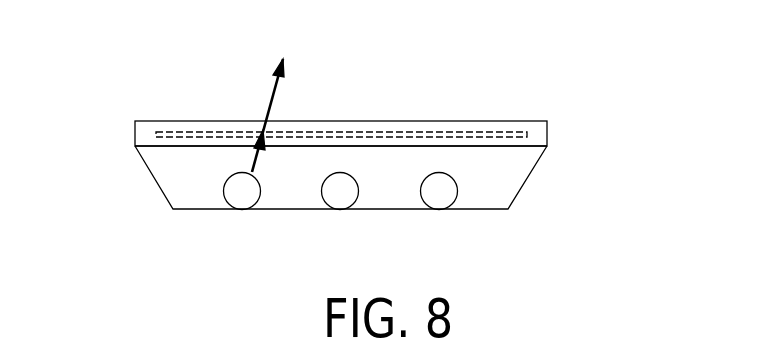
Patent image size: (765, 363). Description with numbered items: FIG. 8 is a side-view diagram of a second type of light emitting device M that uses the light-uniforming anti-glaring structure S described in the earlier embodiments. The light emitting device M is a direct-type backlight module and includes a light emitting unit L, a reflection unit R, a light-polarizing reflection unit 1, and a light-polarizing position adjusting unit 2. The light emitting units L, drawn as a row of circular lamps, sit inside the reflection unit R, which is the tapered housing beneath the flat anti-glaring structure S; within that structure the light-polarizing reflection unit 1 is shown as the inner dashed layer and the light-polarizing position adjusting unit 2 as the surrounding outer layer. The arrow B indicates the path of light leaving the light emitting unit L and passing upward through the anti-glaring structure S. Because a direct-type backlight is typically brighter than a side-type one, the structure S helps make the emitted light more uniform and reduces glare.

The light emitting device M is at (181, 58).
The light-uniforming anti-glaring structure S is at (615, 91).
The light-polarizing reflection unit 1 is at (500, 131).
The light-polarizing position adjusting unit 2 is at (542, 137).
The reflection unit R is at (149, 178).
The light emitting unit L is at (242, 211).
The light beam B is at (268, 119).